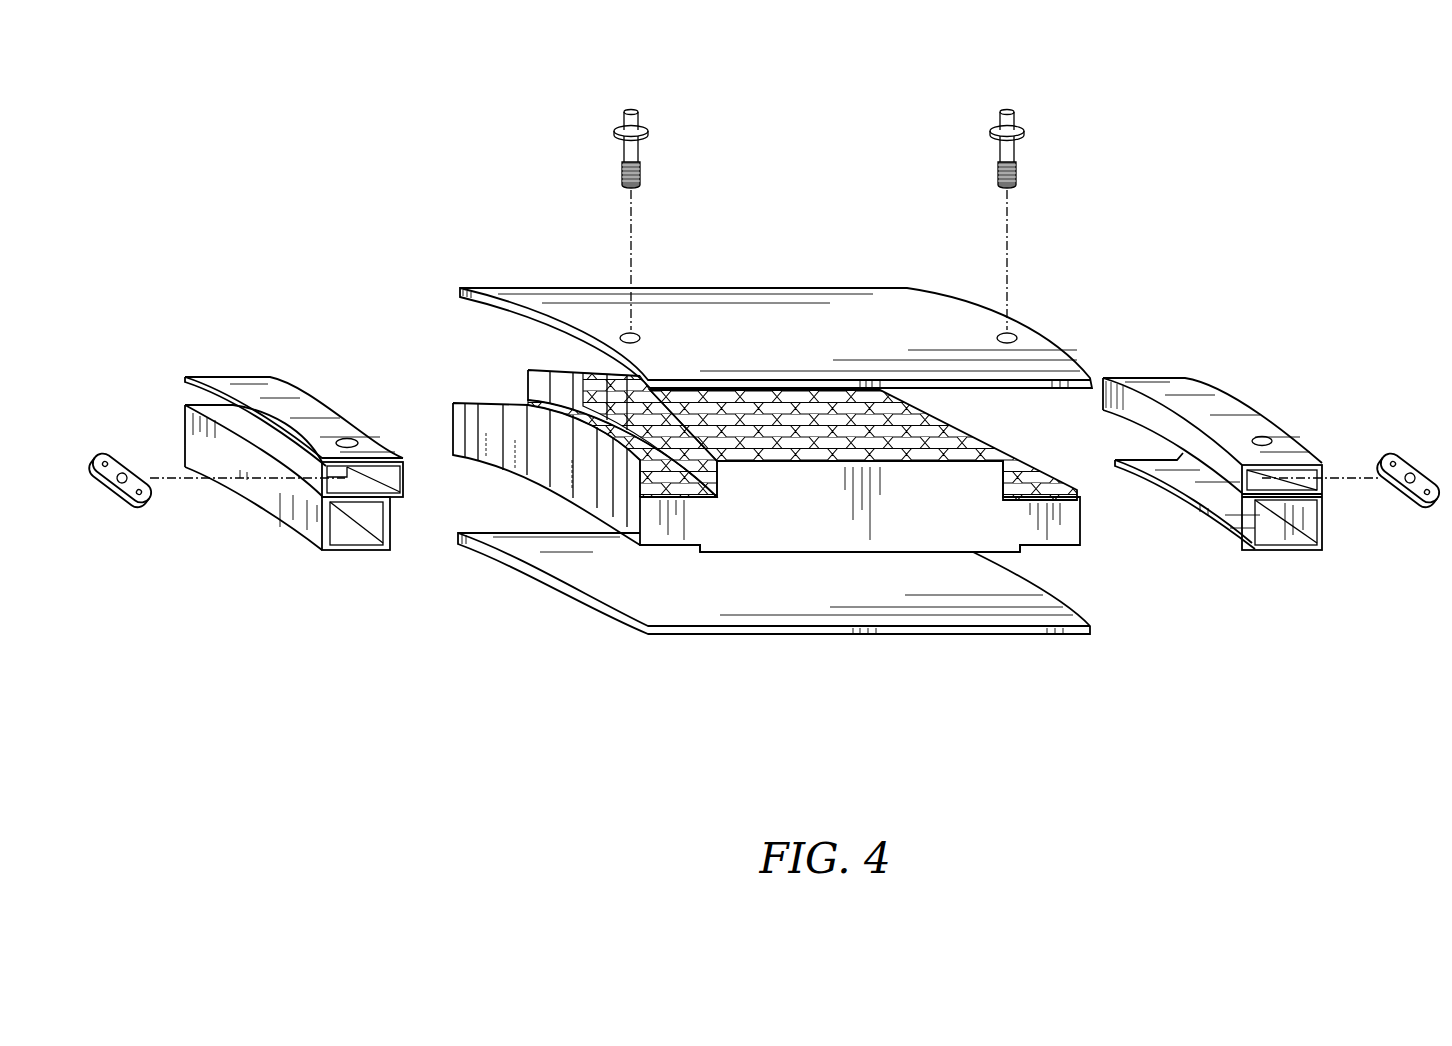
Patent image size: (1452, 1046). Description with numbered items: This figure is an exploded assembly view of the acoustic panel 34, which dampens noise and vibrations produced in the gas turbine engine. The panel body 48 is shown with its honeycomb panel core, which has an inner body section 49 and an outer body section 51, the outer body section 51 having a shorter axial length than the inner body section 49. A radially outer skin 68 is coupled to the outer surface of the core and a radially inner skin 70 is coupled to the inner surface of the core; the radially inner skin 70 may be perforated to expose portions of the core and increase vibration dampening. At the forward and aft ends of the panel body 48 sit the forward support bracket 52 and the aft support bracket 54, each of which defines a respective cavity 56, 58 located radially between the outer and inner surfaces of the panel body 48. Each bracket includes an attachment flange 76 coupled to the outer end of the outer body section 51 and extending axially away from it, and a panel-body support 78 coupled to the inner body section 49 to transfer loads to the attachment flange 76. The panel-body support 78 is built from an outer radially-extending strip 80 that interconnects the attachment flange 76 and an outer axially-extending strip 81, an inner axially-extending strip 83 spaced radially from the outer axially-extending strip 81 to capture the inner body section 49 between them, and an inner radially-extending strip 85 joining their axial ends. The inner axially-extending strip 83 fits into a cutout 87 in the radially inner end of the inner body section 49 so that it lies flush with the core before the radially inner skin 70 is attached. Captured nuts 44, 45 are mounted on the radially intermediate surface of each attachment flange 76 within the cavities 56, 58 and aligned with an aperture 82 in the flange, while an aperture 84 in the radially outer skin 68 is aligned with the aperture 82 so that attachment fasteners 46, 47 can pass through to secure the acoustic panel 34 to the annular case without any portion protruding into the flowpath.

The acoustic panel 34 is at (1185, 185).
The captured nut 44 is at (117, 450).
The captured nut 45 is at (1413, 455).
The attachment fastener 46 is at (605, 105).
The attachment fastener 47 is at (1040, 95).
The panel body 48 is at (1053, 280).
The inner body section 49 is at (769, 555).
The outer body section 51 is at (745, 436).
The forward support bracket 52 is at (262, 348).
The aft support bracket 54 is at (1233, 323).
The cavity 56 is at (195, 395).
The cavity 58 is at (1327, 450).
The radially outer skin 68 is at (848, 343).
The radially inner skin 70 is at (962, 626).
The attachment flange 76 is at (305, 408).
The panel-body support 78 is at (293, 553).
The outer radially-extending strip 80 is at (408, 470).
The outer axially-extending strip 81 is at (390, 497).
The aperture 82 is at (350, 435).
The inner axially-extending strip 83 is at (375, 553).
The aperture 84 is at (637, 328).
The inner radially-extending strip 85 is at (283, 510).
The cutout 87 is at (673, 555).